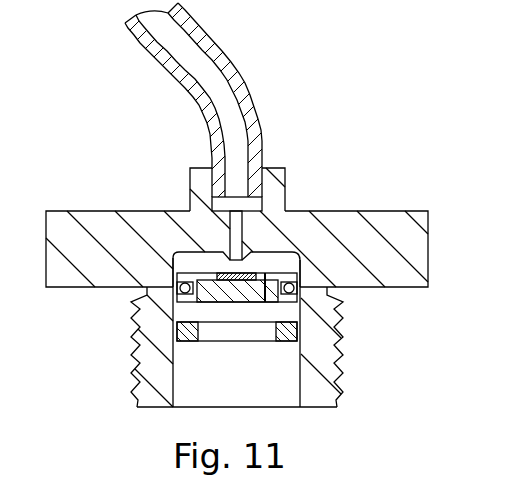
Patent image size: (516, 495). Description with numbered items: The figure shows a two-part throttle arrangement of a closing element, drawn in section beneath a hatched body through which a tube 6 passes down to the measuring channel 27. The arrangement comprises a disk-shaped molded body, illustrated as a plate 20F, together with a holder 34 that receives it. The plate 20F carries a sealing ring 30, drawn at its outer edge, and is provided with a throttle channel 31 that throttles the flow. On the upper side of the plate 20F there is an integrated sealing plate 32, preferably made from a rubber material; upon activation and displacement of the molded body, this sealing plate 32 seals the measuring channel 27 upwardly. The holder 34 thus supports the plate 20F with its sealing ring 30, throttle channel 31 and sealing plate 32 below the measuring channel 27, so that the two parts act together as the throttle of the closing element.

The tube 6 is at (157, 55).
The measuring channel 27 is at (237, 233).
The throttle channel 31 is at (287, 273).
The sealing ring 30 is at (237, 290).
The sealing plate 32 is at (222, 273).
The disk-shaped molded body 20F is at (292, 302).
The holder 34 is at (177, 328).